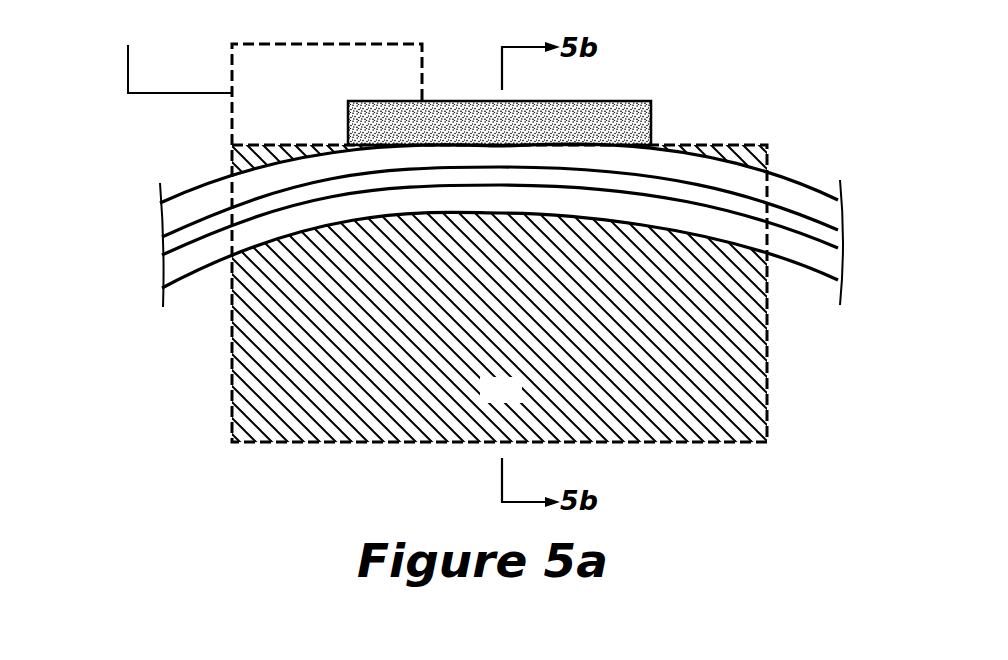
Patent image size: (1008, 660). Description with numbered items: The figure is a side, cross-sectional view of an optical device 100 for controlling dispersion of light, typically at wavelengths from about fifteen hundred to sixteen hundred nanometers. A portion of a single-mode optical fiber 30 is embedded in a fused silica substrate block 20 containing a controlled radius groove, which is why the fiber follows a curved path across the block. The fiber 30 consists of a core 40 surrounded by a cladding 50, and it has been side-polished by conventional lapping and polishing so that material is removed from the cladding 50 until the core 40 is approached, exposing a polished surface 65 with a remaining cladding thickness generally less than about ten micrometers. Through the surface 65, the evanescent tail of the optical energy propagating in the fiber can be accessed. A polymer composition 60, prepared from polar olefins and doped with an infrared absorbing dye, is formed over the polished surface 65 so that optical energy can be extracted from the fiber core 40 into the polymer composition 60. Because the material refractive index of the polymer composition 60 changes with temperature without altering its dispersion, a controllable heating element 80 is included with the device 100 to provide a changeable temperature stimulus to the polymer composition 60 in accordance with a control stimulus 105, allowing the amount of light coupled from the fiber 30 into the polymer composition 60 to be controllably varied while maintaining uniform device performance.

The fused silica substrate block 20 is at (517, 401).
The single-mode optical fiber 30 is at (495, 225).
The core 40 is at (817, 235).
The cladding 50 is at (790, 250).
The polymer composition 60 is at (617, 122).
The surface 65 is at (472, 148).
The controllable heating element 80 is at (357, 63).
The optical device 100 is at (781, 82).
The control stimulus 105 is at (128, 65).